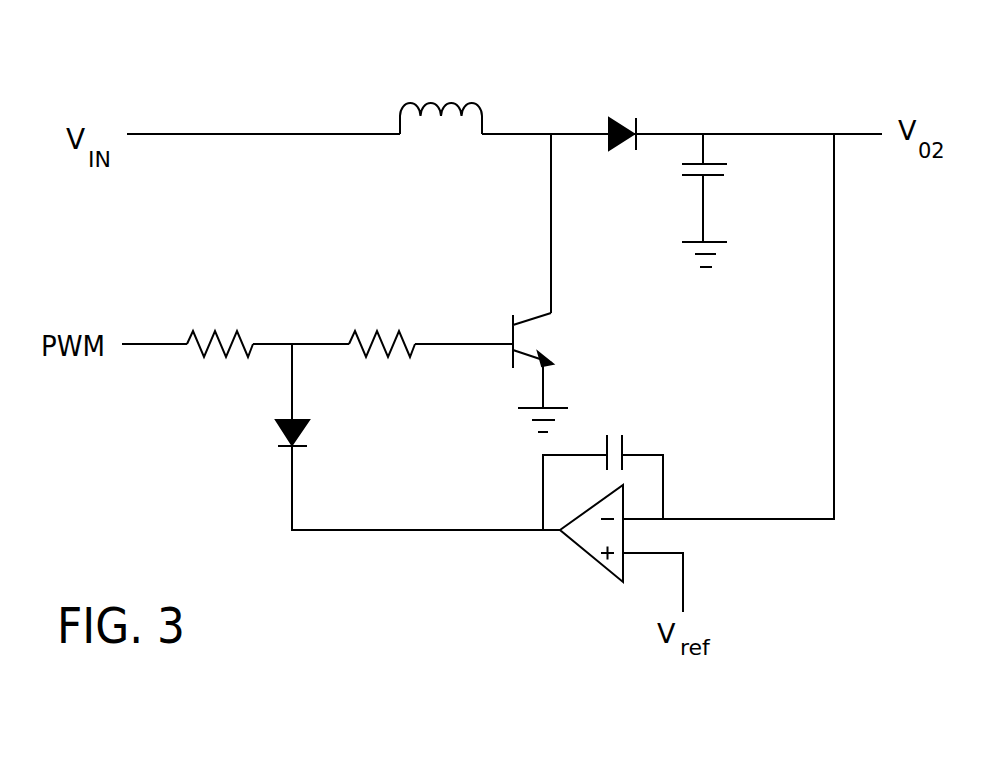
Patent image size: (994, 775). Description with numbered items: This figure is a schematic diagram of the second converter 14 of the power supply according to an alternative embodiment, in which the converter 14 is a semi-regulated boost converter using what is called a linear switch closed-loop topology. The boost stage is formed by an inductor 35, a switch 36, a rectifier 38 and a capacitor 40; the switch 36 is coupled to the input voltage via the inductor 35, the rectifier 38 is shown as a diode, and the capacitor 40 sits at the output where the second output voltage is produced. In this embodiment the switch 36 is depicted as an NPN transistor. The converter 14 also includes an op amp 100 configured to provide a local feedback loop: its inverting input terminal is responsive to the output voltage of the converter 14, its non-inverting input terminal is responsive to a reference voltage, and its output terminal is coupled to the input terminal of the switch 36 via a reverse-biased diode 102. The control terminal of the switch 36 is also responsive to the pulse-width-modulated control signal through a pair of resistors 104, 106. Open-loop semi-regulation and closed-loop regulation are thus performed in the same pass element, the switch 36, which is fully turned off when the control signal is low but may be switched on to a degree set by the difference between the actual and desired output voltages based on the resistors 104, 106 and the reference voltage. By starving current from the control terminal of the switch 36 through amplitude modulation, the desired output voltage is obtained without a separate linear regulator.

The second converter 14 is at (800, 87).
The inductor 35 is at (430, 117).
The rectifier 38 is at (620, 120).
The capacitor 40 is at (725, 170).
The switch 36 is at (538, 342).
The resistor 104 is at (215, 335).
The resistor 106 is at (355, 335).
The reverse-biased diode 102 is at (307, 427).
The op amp 100 is at (585, 550).